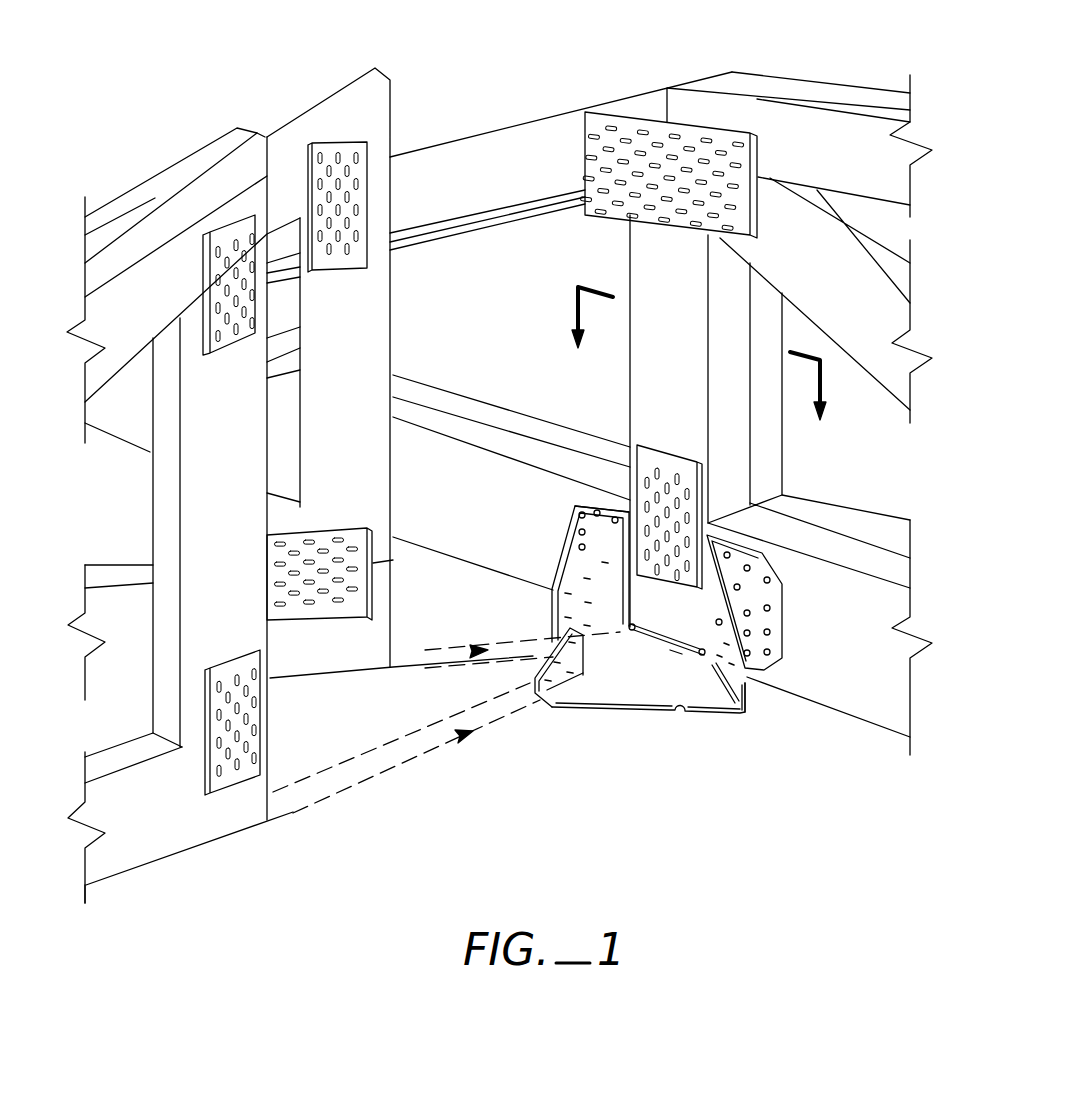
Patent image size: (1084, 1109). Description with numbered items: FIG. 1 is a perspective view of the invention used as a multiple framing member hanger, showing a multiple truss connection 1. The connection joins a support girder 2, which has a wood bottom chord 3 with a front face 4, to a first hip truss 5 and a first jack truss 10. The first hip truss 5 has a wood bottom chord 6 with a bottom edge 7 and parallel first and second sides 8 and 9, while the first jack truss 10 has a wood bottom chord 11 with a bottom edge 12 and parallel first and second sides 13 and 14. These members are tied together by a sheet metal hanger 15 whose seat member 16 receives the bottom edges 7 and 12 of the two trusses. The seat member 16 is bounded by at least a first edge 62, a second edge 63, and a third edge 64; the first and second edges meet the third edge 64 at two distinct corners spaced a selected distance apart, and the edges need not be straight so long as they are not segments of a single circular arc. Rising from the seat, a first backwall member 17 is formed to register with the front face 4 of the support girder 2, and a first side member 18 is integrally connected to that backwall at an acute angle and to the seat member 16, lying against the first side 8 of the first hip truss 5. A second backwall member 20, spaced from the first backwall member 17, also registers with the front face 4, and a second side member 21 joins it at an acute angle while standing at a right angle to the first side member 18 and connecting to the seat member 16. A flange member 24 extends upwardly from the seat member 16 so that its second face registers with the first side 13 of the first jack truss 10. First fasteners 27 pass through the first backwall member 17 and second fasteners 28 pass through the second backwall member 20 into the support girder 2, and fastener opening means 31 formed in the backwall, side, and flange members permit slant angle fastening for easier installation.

The multiple truss connection 1 is at (544, 84).
The support girder 2 is at (788, 67).
The wood bottom chord 3 is at (877, 765).
The front face 4 is at (809, 616).
The first hip truss 5 is at (352, 71).
The wood bottom chord 6 is at (407, 616).
The bottom edge 7 is at (358, 678).
The first side 8 is at (130, 565).
The second side 9 is at (319, 590).
The first jack truss 10 is at (220, 136).
The wood bottom chord 11 is at (276, 770).
The bottom edge 12 is at (210, 846).
The first side 13 is at (124, 744).
The second side 14 is at (119, 856).
The sheet metal hanger 15 is at (593, 722).
The seat member 16 is at (648, 692).
The first backwall member 17 is at (574, 506).
The first side member 18 is at (553, 585).
The second backwall member 20 is at (740, 558).
The second side member 21 is at (750, 697).
The flange member 24 is at (537, 667).
The first fasteners 27 is at (613, 521).
The second fasteners 28 is at (772, 606).
The fastener opening means 31 is at (716, 623).
The first edge 62 is at (600, 640).
The second edge 63 is at (722, 688).
The third edge 64 is at (678, 656).